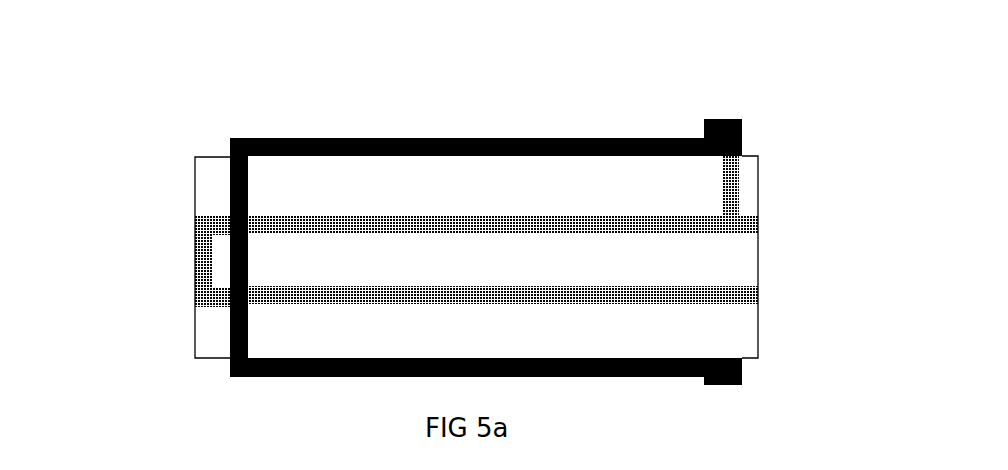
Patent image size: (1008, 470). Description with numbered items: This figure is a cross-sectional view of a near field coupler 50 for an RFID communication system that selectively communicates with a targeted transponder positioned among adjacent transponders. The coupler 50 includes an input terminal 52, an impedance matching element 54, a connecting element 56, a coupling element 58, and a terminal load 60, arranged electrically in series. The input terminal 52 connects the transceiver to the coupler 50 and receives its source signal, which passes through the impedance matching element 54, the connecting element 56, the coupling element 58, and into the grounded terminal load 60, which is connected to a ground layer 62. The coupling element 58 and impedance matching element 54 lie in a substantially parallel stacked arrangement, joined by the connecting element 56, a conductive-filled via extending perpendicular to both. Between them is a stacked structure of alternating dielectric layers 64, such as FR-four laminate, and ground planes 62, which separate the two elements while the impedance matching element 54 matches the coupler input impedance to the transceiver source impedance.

The near field coupler 50 is at (95, 58).
The input terminal 52 is at (742, 376).
The impedance matching element 54 is at (282, 378).
The connecting element 56 is at (232, 340).
The coupling element 58 is at (455, 138).
The terminal load 60 is at (742, 120).
The ground plane 62 is at (757, 293).
The dielectric layer 64 is at (210, 182).